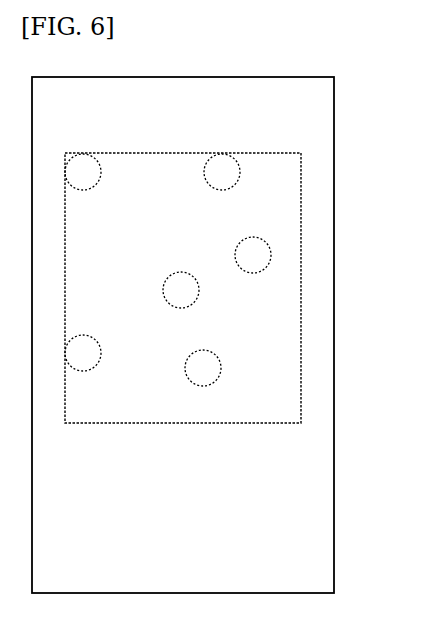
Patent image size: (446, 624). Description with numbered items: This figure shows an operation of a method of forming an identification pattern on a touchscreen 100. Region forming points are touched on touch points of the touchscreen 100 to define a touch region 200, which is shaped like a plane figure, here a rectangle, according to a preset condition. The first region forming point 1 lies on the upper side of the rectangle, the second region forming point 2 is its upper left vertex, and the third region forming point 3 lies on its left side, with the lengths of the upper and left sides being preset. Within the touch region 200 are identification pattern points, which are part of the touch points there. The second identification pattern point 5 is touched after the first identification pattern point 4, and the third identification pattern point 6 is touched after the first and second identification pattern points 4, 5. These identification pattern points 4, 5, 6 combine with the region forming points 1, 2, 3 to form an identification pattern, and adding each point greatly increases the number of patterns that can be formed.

The touchscreen 100 is at (334, 333).
The touch region 200 is at (301, 261).
The first region forming point 1 is at (222, 172).
The second region forming point 2 is at (83, 172).
The third region forming point 3 is at (83, 353).
The first identification pattern point 4 is at (181, 290).
The second identification pattern point 5 is at (253, 255).
The third identification pattern point 6 is at (203, 368).